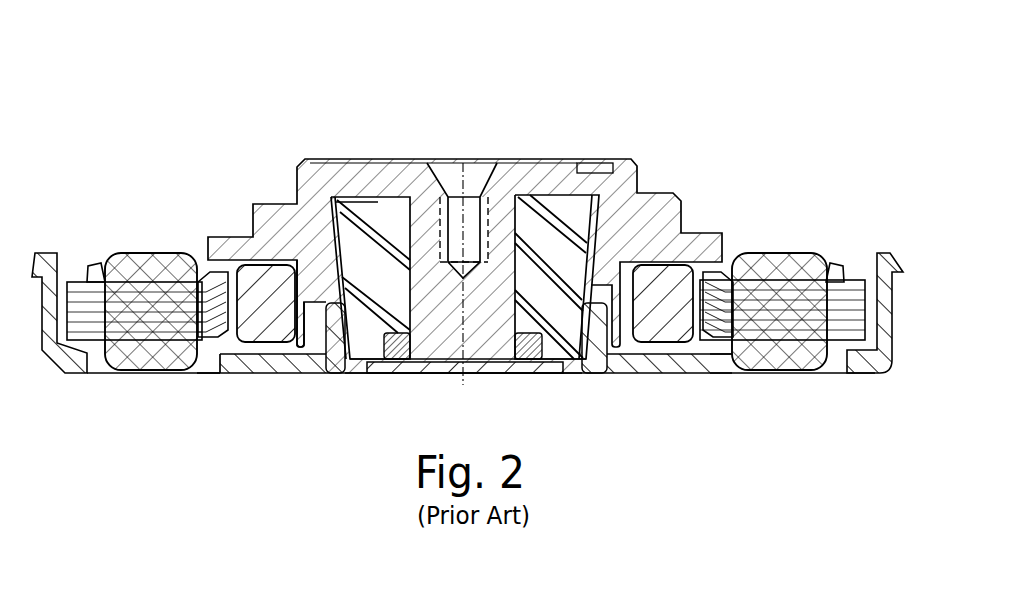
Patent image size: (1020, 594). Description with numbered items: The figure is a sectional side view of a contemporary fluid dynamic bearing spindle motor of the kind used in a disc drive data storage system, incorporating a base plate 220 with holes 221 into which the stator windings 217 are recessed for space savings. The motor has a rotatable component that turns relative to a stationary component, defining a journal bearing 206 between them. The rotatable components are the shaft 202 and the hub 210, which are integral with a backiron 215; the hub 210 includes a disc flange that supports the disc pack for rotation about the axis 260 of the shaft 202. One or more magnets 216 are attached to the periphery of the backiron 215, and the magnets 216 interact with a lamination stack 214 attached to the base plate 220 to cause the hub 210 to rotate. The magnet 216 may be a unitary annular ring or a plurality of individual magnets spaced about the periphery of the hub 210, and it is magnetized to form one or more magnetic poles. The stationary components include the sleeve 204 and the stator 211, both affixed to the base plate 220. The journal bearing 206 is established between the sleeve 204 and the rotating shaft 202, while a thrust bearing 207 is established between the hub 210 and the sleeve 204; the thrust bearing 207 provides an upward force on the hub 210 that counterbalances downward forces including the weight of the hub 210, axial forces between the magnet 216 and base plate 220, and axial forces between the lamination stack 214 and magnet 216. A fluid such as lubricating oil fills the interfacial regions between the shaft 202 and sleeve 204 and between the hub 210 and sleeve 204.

The shaft 202 is at (427, 240).
The sleeve 204 is at (530, 222).
The journal bearing 206 is at (485, 207).
The thrust bearing 207 is at (545, 180).
The hub 210 is at (663, 217).
The stator 211 is at (137, 218).
The lamination stack 214 is at (147, 327).
The backiron 215 is at (302, 287).
The magnet 216 is at (268, 320).
The stator windings 217 is at (163, 362).
The base plate 220 is at (651, 363).
The holes 221 is at (203, 360).
The axis 260 is at (463, 159).